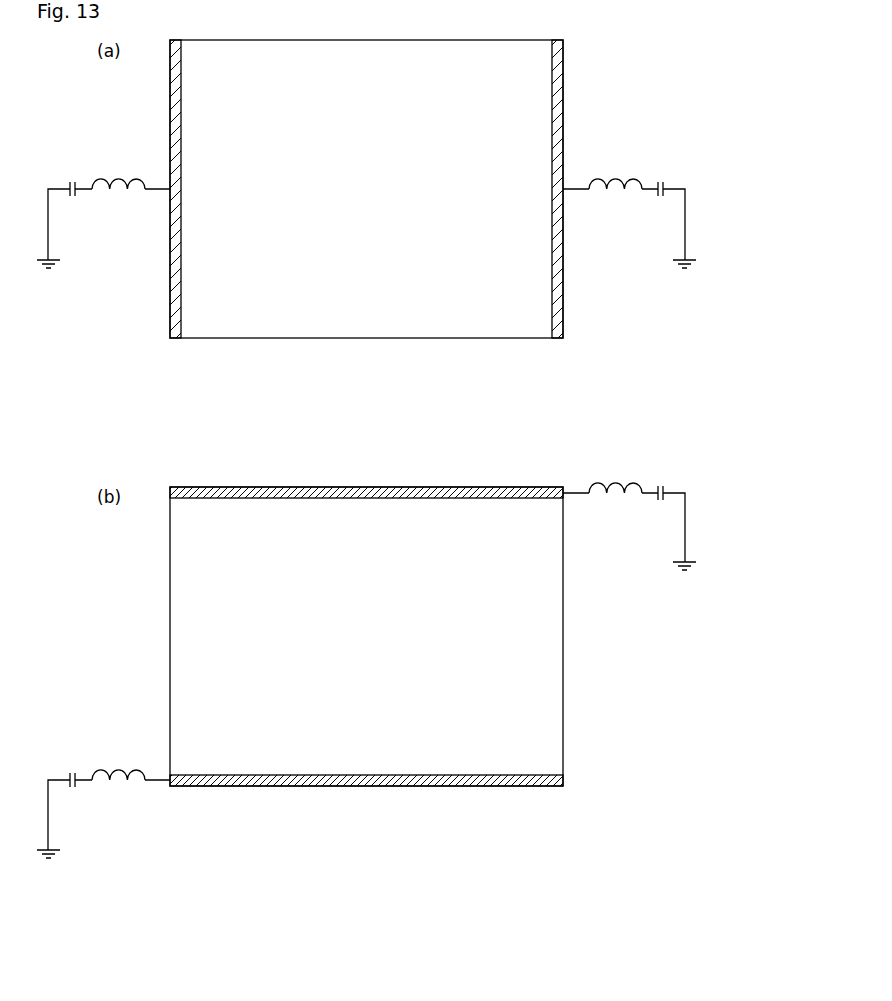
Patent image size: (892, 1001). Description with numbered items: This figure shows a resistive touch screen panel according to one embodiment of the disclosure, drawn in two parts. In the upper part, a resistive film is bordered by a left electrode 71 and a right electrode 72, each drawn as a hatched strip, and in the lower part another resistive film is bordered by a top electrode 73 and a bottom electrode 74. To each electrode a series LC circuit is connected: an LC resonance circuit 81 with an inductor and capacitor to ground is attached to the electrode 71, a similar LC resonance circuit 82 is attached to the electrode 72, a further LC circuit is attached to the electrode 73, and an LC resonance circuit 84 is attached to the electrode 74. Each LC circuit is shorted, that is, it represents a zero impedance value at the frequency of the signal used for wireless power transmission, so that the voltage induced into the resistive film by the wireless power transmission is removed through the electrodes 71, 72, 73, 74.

The electrode 71 is at (172, 107).
The electrode 72 is at (561, 107).
The electrode 73 is at (382, 487).
The electrode 74 is at (382, 786).
The first LC matching circuit 81 is at (97, 167).
The second LC matching circuit 82 is at (637, 167).
The fourth LC matching circuit 84 is at (97, 758).